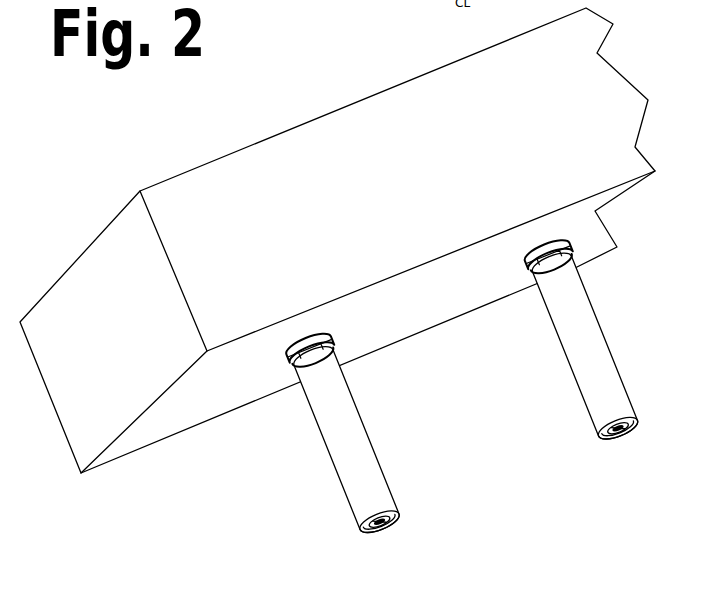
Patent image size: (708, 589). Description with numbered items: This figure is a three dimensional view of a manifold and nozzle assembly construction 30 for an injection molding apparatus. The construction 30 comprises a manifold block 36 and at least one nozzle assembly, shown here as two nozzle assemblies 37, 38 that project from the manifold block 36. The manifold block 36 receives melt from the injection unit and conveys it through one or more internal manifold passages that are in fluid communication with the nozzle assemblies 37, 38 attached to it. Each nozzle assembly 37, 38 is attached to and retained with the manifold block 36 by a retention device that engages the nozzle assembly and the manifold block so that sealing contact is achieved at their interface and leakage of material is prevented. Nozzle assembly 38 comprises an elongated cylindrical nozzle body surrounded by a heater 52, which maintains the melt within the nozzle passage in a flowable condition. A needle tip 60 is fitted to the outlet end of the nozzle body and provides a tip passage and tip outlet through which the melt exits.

The manifold and nozzle assembly construction 30 is at (337, 240).
The manifold block 36 is at (556, 117).
The nozzle assembly 37 is at (381, 438).
The nozzle assembly 38 is at (606, 365).
The heater 52 is at (585, 346).
The needle tip 60 is at (643, 452).